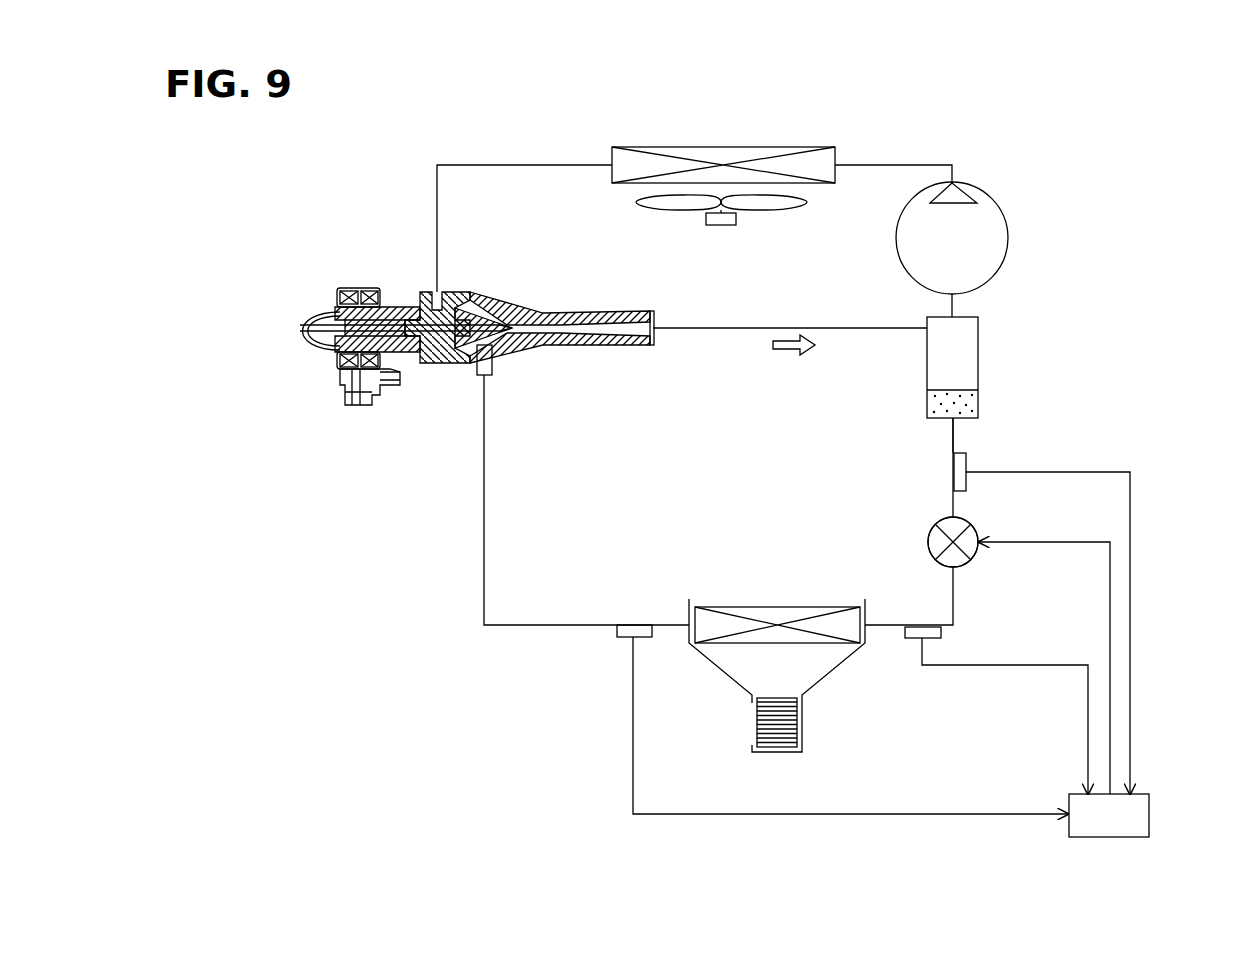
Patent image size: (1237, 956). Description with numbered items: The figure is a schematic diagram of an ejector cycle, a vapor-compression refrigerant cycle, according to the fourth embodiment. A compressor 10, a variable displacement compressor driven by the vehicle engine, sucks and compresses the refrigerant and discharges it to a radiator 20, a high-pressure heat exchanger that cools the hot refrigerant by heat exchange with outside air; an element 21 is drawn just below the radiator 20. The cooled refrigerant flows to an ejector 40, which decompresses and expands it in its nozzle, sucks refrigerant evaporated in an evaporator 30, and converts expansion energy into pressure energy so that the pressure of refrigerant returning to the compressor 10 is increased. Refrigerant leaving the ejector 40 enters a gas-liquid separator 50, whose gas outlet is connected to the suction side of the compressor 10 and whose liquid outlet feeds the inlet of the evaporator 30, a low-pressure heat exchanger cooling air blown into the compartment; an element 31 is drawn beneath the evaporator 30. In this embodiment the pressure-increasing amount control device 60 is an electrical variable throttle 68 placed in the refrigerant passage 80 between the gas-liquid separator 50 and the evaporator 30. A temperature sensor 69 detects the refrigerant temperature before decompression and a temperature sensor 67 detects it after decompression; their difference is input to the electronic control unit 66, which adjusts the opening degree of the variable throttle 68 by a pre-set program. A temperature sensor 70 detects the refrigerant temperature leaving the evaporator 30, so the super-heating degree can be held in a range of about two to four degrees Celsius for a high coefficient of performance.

The compressor 10 is at (972, 228).
The radiator 20 is at (610, 160).
The cooling fan 21 is at (778, 203).
The evaporator 30 is at (727, 607).
The blower 31 is at (797, 720).
The ejector 40 is at (378, 268).
The gas-liquid separator 50 is at (962, 370).
The pressure-increasing amount control device 60 is at (953, 542).
The electronic control unit 66 is at (1150, 816).
The temperature sensor 67 is at (943, 633).
The electrical variable throttle 68 is at (975, 528).
The temperature sensor 69 is at (966, 460).
The temperature sensor 70 is at (623, 638).
The refrigerant passage 80 is at (952, 437).